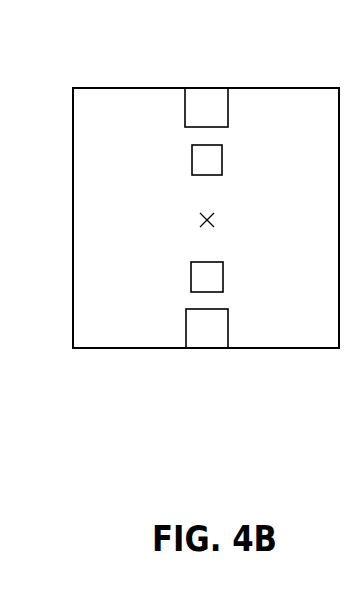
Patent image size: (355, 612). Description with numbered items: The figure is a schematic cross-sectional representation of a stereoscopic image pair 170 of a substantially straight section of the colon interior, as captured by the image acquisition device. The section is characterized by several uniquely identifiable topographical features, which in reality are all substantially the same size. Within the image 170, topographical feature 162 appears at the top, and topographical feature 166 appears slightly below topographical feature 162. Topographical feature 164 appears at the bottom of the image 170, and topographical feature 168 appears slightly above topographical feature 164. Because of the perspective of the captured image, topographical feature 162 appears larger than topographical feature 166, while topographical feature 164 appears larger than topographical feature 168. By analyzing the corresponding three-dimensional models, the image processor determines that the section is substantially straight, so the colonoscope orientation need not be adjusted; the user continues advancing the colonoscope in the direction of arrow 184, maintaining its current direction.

The stereoscopic image pair 170 is at (298, 88).
The topographical feature 162 is at (185, 117).
The topographical feature 166 is at (192, 160).
The arrow 184 is at (216, 219).
The topographical feature 168 is at (191, 272).
The topographical feature 164 is at (186, 330).